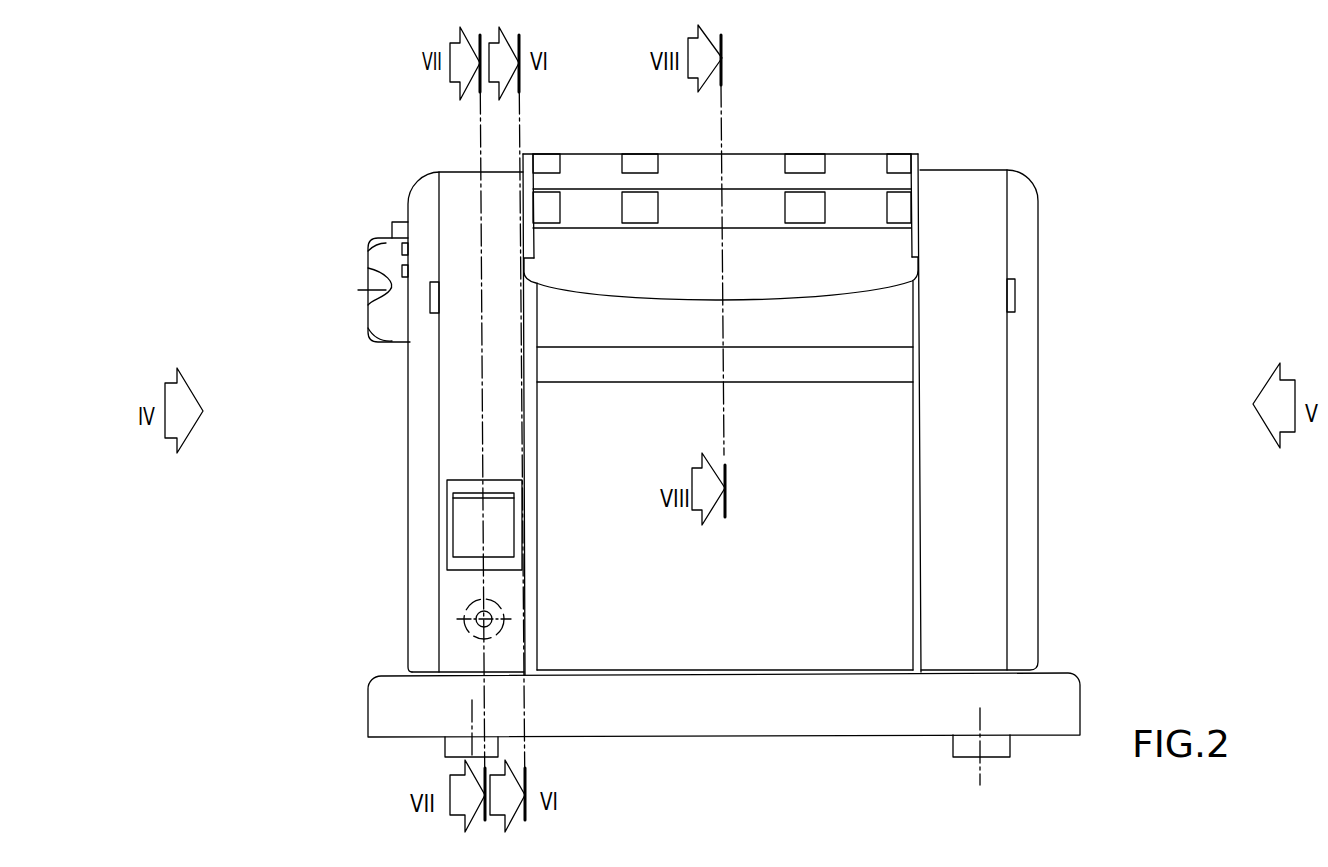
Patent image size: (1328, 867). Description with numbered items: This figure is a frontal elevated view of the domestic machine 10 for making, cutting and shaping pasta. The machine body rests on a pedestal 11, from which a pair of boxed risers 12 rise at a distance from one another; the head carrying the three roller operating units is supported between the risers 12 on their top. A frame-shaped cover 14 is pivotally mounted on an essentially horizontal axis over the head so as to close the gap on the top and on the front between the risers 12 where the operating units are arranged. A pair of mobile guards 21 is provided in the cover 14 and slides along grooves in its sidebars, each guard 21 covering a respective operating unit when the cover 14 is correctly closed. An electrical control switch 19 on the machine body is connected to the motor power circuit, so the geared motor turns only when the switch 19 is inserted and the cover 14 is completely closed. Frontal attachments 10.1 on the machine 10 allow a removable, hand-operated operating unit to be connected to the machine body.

The domestic machine for making, cutting and shaping pasta 10 is at (1065, 172).
The frontal attachments 10.1 is at (434, 292).
The pedestal 11 is at (1065, 692).
The boxed risers 12 is at (468, 422).
The cover 14 is at (783, 302).
The electrical control switch 19 is at (499, 537).
The mobile guards 21 is at (757, 158).